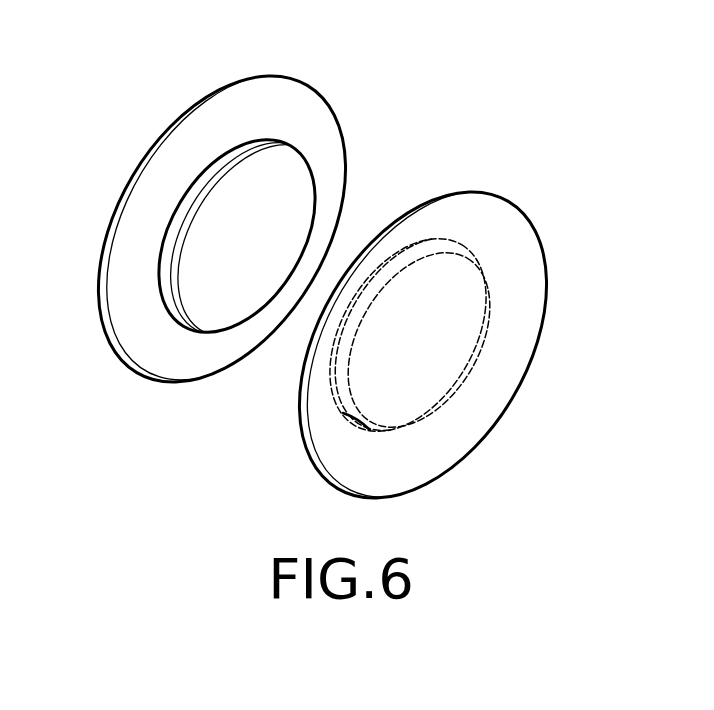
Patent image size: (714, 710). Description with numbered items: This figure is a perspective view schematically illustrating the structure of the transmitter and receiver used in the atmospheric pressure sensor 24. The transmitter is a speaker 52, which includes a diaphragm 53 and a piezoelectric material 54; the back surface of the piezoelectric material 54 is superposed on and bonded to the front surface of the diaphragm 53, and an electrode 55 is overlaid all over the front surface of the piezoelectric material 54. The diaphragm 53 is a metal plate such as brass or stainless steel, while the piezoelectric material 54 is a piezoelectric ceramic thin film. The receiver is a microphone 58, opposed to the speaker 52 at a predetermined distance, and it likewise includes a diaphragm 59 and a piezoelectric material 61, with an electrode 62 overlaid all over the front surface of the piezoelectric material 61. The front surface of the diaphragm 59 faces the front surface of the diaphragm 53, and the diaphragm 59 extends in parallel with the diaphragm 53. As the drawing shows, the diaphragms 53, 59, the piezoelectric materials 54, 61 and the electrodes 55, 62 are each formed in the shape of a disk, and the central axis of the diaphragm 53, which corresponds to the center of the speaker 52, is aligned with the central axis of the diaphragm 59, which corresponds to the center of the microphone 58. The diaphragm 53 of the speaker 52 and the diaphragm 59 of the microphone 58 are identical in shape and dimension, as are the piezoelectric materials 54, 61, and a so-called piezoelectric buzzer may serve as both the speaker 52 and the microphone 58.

The atmospheric pressure sensor 24 is at (439, 102).
The speaker 52 is at (182, 65).
The diaphragm 53 is at (148, 165).
The piezoelectric material 54 is at (255, 140).
The electrode 55 is at (305, 197).
The microphone 58 is at (543, 172).
The diaphragm 59 is at (467, 192).
The piezoelectric material 61 is at (343, 413).
The electrode 62 is at (331, 379).